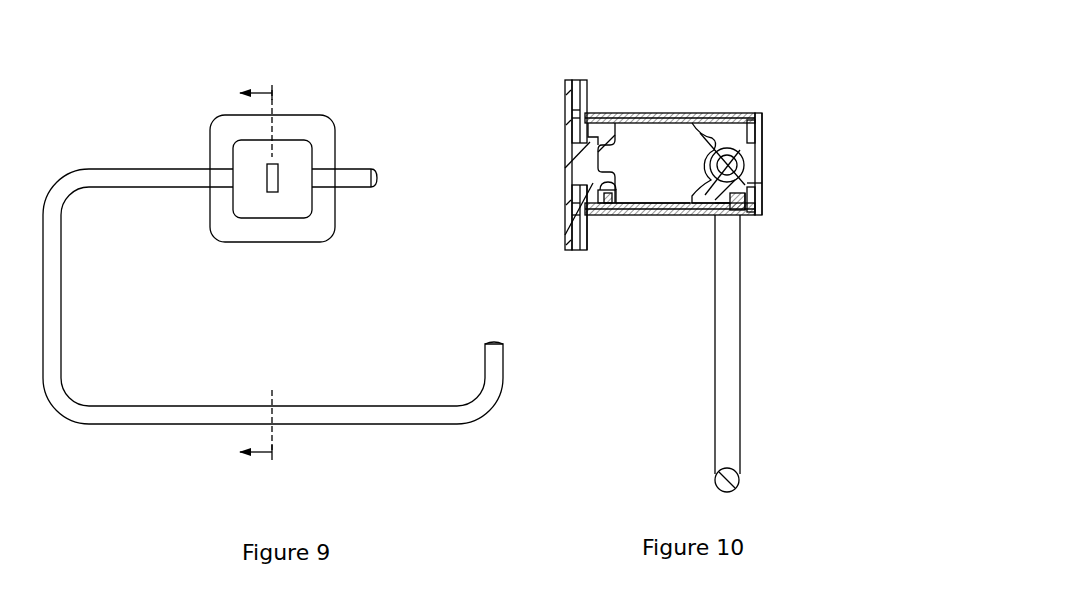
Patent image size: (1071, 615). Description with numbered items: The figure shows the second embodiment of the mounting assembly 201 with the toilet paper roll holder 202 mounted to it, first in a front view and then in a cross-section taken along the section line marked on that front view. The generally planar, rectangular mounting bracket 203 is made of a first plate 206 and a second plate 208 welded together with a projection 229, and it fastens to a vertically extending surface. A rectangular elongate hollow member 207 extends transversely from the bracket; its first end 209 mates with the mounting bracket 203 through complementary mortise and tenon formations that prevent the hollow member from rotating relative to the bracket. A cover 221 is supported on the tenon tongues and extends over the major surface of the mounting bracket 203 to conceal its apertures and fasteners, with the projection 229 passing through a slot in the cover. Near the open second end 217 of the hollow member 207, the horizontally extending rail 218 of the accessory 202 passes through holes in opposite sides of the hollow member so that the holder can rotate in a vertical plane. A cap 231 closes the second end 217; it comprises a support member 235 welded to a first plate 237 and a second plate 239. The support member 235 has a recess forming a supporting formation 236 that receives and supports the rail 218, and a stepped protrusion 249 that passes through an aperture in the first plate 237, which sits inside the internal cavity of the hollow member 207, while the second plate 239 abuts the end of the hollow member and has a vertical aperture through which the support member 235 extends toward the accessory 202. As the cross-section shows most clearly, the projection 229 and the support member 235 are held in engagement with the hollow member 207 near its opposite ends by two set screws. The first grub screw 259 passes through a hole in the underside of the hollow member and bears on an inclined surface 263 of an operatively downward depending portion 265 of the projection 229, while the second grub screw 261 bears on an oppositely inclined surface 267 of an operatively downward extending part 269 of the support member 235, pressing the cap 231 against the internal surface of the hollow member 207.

In FIG. 9, the mounting assembly 201 is at (147, 132).
In FIG. 10, the mounting assembly 201 is at (532, 100).
In FIG. 9, the toilet paper roll holder 202 is at (142, 423).
In FIG. 10, the toilet paper roll holder 202 is at (715, 418).
In FIG. 10, the mounting bracket 203 is at (575, 72).
In FIG. 10, the first plate 206 is at (565, 237).
In FIG. 10, the elongate hollow member 207 is at (675, 115).
In FIG. 10, the second plate 208 is at (575, 250).
In FIG. 10, the first end 209 is at (592, 108).
In FIG. 10, the second end 217 is at (748, 110).
In FIG. 10, the rail 218 is at (733, 163).
In FIG. 9, the cover 221 is at (283, 125).
In FIG. 10, the cover 221 is at (592, 250).
In FIG. 10, the projection 229 is at (590, 152).
In FIG. 9, the cap 231 is at (295, 172).
In FIG. 10, the cap 231 is at (763, 110).
In FIG. 10, the support member 235 is at (717, 130).
In FIG. 10, the supporting formation 236 is at (738, 177).
In FIG. 10, the first plate 237 is at (762, 120).
In FIG. 10, the second plate 239 is at (760, 133).
In FIG. 9, the stepped protrusion 249 is at (280, 190).
In FIG. 10, the stepped protrusion 249 is at (732, 163).
In FIG. 10, the grub screw 259 is at (616, 204).
In FIG. 10, the grub screw 261 is at (740, 215).
In FIG. 10, the inclined surface 263 is at (617, 210).
In FIG. 10, the downward depending portion 265 is at (632, 210).
In FIG. 10, the inclined surface 267 is at (748, 190).
In FIG. 10, the downward extending part 269 is at (720, 213).